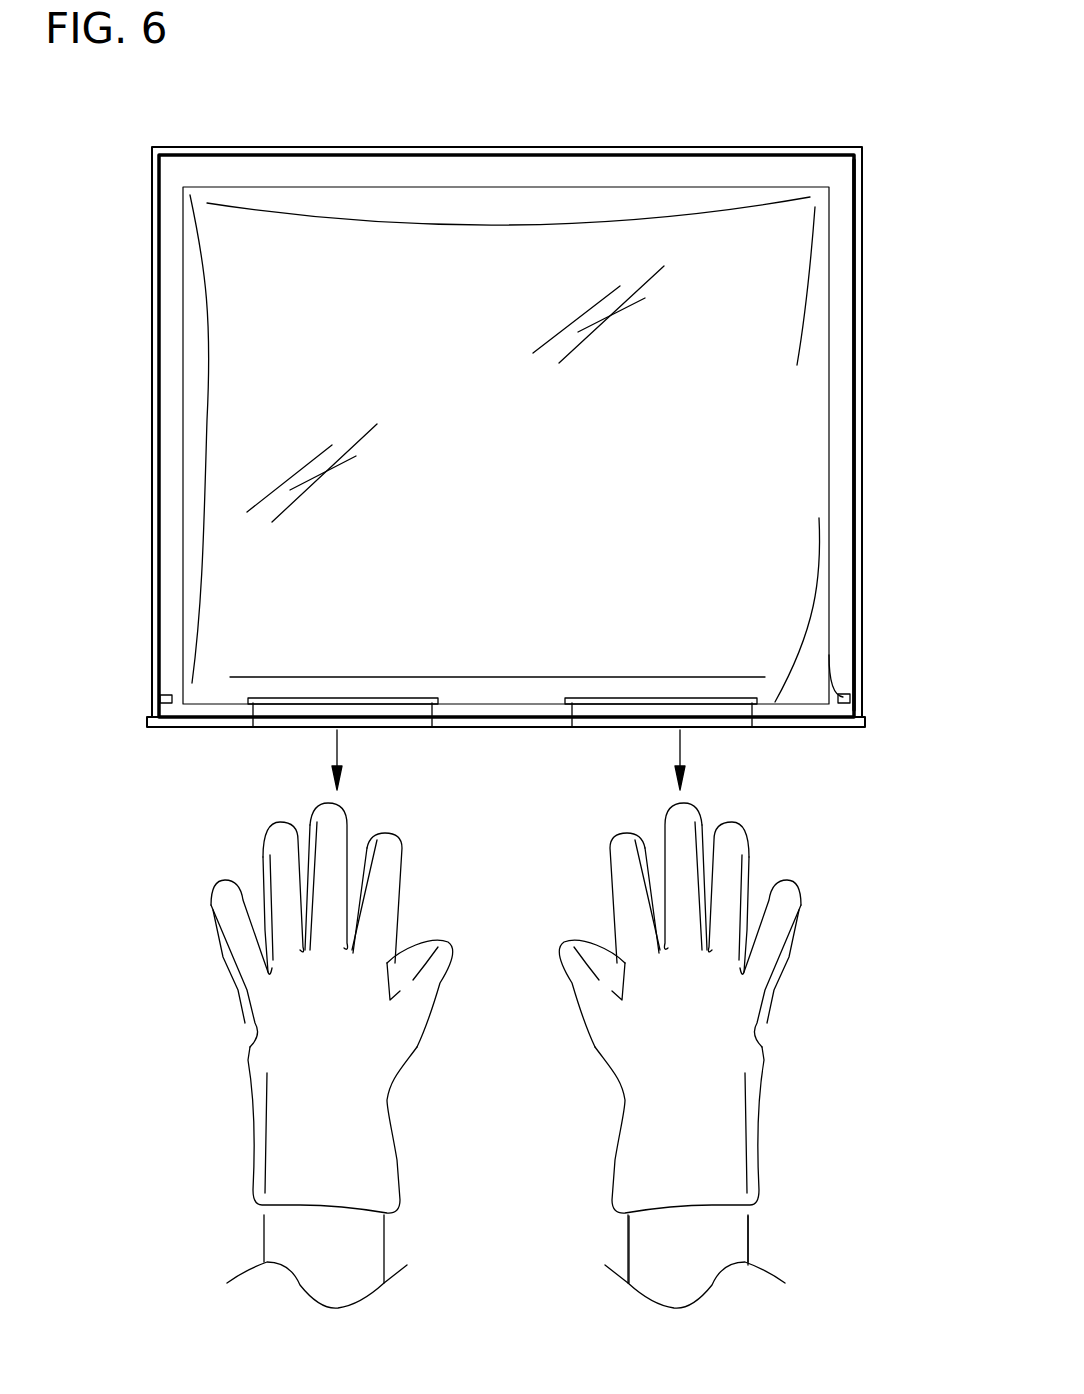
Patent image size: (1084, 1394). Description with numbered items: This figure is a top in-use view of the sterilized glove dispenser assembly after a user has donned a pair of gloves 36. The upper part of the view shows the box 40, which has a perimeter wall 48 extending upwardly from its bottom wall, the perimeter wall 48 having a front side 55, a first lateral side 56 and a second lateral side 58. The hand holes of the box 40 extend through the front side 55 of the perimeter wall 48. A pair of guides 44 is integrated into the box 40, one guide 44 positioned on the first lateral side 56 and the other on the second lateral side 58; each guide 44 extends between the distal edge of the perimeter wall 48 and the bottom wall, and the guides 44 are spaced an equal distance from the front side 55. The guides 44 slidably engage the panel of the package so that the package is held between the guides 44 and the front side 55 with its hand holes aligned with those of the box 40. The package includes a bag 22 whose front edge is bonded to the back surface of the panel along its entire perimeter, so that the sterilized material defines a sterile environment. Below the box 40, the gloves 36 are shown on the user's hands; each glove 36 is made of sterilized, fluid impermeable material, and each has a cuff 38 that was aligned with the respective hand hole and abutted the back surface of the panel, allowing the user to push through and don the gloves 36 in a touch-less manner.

The bag 22 is at (755, 190).
The box 40 is at (855, 148).
The first lateral side 56 is at (152, 444).
The perimeter wall 48 is at (862, 470).
The second lateral side 58 is at (862, 503).
The guides 44 is at (167, 695).
The front side 55 is at (774, 727).
The gloves 36 is at (235, 962).
The cuff 38 is at (723, 1208).